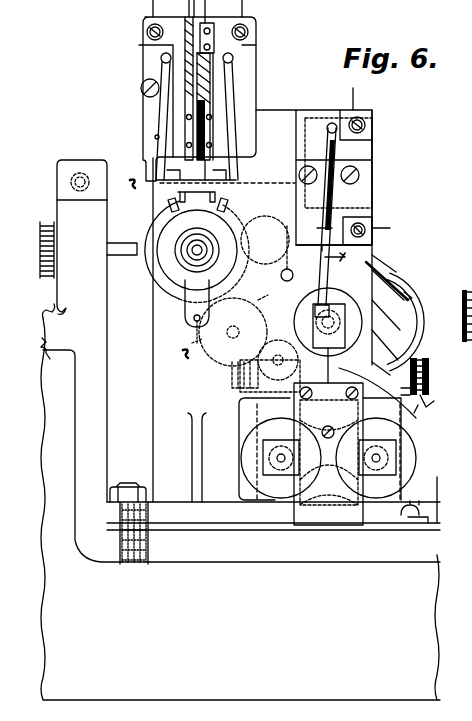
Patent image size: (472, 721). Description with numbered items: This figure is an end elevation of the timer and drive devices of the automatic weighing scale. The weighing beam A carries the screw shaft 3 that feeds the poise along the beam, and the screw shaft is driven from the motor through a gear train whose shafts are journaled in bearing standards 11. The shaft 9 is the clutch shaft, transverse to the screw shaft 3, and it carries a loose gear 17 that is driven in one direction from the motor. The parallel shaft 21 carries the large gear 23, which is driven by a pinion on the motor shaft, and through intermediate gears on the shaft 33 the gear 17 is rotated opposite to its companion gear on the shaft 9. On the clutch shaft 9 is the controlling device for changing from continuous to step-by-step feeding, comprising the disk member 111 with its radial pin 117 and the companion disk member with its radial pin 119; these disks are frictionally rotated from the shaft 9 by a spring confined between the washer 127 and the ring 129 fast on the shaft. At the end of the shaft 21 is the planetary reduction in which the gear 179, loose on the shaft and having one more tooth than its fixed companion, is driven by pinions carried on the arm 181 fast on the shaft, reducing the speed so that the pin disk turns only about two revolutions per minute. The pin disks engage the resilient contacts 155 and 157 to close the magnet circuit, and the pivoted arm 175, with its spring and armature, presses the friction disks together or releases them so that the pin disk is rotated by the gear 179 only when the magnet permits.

The screw shaft 3 is at (40, 222).
The weighing beam A is at (38, 341).
The shaft 9 is at (188, 251).
The standards 11 is at (158, 410).
The gear 17 is at (148, 268).
The shaft 21 is at (307, 322).
The large gear 23 is at (414, 284).
The shaft 33 is at (267, 258).
The disk member 111 is at (221, 233).
The pin 117 is at (222, 210).
The pin 119 is at (173, 207).
The washer 127 is at (186, 268).
The ring 129 is at (182, 251).
The resilient contact 155 is at (330, 216).
The resilient contact 157 is at (342, 160).
The arm 175 is at (410, 395).
The gear 179 is at (372, 315).
The arm 181 is at (323, 277).